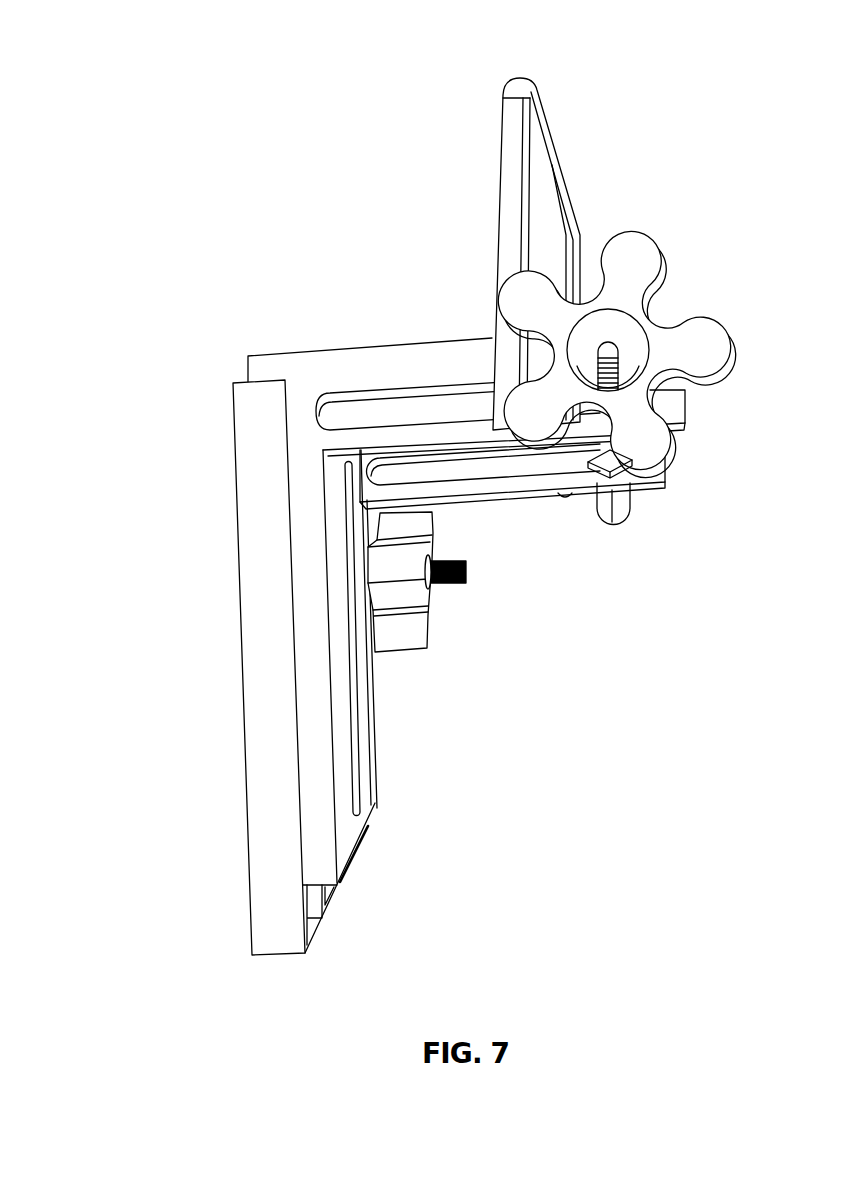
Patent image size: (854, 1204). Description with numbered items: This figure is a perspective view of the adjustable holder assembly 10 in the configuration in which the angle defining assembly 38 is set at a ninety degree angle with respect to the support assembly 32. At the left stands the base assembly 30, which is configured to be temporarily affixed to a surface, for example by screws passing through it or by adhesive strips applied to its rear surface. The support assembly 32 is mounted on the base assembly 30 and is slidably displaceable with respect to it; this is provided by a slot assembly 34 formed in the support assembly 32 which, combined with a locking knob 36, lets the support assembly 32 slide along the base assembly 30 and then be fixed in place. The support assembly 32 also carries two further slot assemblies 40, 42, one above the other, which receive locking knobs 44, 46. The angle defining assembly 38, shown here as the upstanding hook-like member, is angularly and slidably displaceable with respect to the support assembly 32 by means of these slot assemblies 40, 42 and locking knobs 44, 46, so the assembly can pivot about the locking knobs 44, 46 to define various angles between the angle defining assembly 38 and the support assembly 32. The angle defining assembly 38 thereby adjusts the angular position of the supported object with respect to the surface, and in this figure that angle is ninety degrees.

The adjustable holder assembly 10 is at (116, 36).
The base assembly 30 is at (260, 788).
The support assembly 32 is at (338, 390).
The slot assembly 34 is at (357, 708).
The locking knob 36 is at (418, 637).
The angle defining assembly 38 is at (557, 150).
The slot assembly 40 is at (390, 413).
The slot assembly 42 is at (478, 470).
The locking knob 44 is at (652, 282).
The locking knob 46 is at (613, 525).